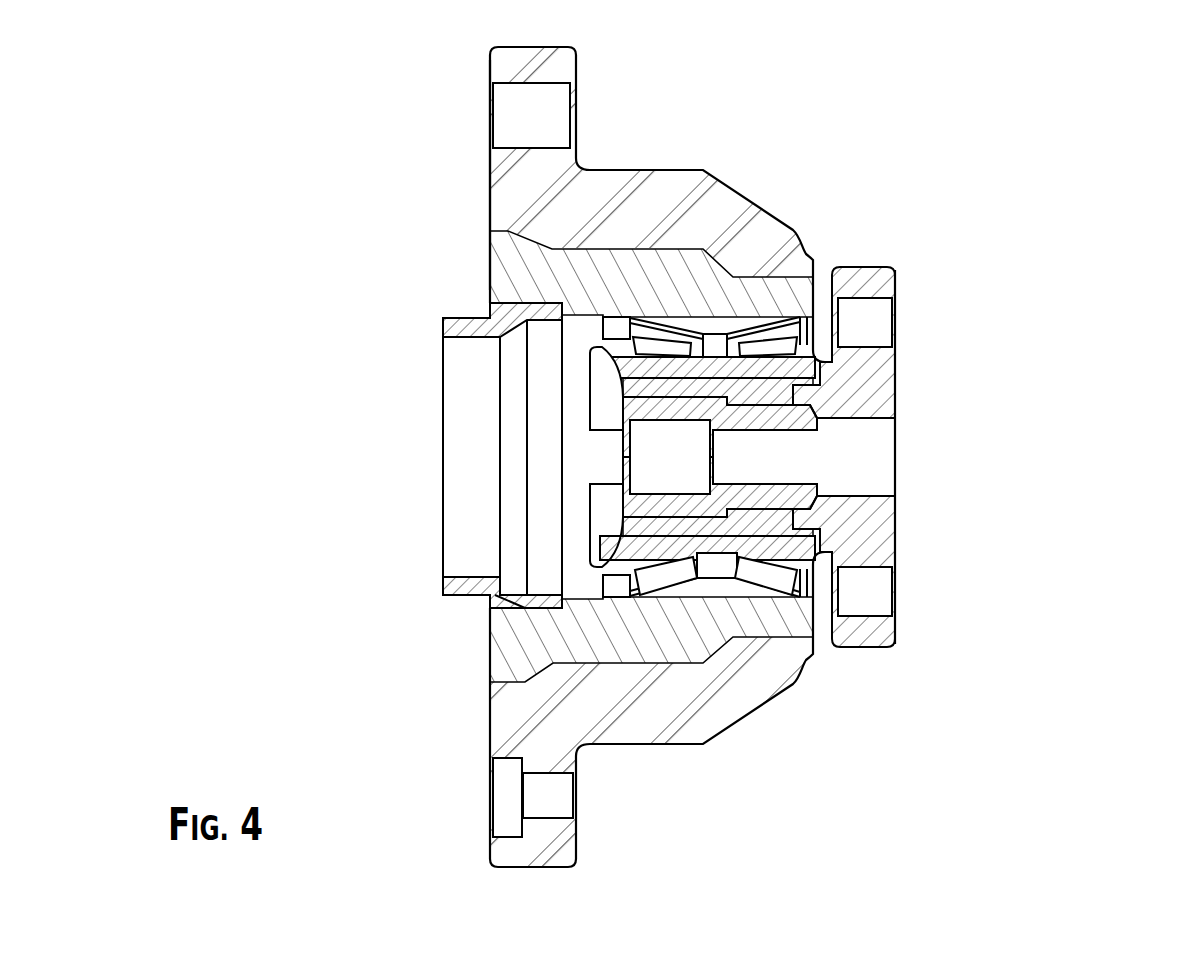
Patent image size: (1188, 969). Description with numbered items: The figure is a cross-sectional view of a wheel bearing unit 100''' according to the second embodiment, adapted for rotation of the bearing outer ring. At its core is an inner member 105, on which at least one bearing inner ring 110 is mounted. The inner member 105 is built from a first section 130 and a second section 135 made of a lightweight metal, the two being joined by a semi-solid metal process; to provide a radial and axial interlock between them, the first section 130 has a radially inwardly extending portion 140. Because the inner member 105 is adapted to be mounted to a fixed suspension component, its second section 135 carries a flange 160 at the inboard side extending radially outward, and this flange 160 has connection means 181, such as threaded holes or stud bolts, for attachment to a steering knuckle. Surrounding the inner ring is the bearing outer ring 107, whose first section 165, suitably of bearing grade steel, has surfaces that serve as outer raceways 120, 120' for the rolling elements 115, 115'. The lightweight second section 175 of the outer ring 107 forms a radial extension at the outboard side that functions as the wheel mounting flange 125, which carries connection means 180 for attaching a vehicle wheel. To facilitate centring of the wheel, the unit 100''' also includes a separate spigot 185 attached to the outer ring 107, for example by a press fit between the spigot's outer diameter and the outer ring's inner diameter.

The bearing unit 100''' is at (868, 472).
The inner member 105 is at (925, 523).
The bearing outer ring 107 is at (812, 220).
The bearing inner ring 110 is at (805, 369).
The rolling elements 115 is at (797, 329).
The rolling elements 115' is at (587, 386).
The outer raceway 120 is at (732, 638).
The outer raceway 120' is at (707, 642).
The wheel mounting flange 125 is at (500, 63).
The first section 130 is at (795, 397).
The second section 135 is at (868, 388).
The radially inwardly extending portion 140 is at (760, 397).
The flange 160 is at (873, 633).
The first section 165 is at (525, 267).
The hub body 175 is at (567, 200).
The connection means 180 is at (512, 120).
The connection means 181 is at (870, 595).
The spigot 185 is at (458, 318).